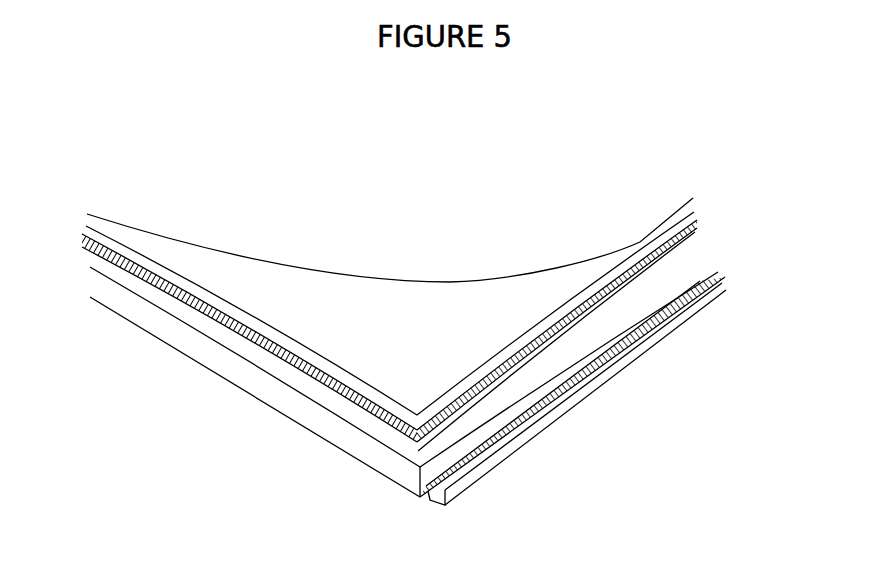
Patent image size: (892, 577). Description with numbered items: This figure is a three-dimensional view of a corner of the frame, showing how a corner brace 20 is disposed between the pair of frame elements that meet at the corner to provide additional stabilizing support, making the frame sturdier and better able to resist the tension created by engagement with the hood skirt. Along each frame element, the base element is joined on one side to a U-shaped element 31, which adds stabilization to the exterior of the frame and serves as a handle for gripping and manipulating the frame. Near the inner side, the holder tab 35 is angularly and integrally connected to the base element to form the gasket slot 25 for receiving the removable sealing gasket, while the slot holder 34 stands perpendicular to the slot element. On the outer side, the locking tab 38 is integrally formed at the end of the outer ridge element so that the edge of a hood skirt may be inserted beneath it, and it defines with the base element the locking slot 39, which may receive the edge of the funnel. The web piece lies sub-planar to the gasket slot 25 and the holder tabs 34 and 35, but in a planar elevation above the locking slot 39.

The corner brace 20 is at (350, 313).
The gasket slot 25 is at (350, 398).
The U-shaped element 31 is at (385, 458).
The slot holder 34 is at (178, 296).
The holder tab 35 is at (643, 282).
The locking tab 38 is at (495, 468).
The locking slot 39 is at (593, 366).